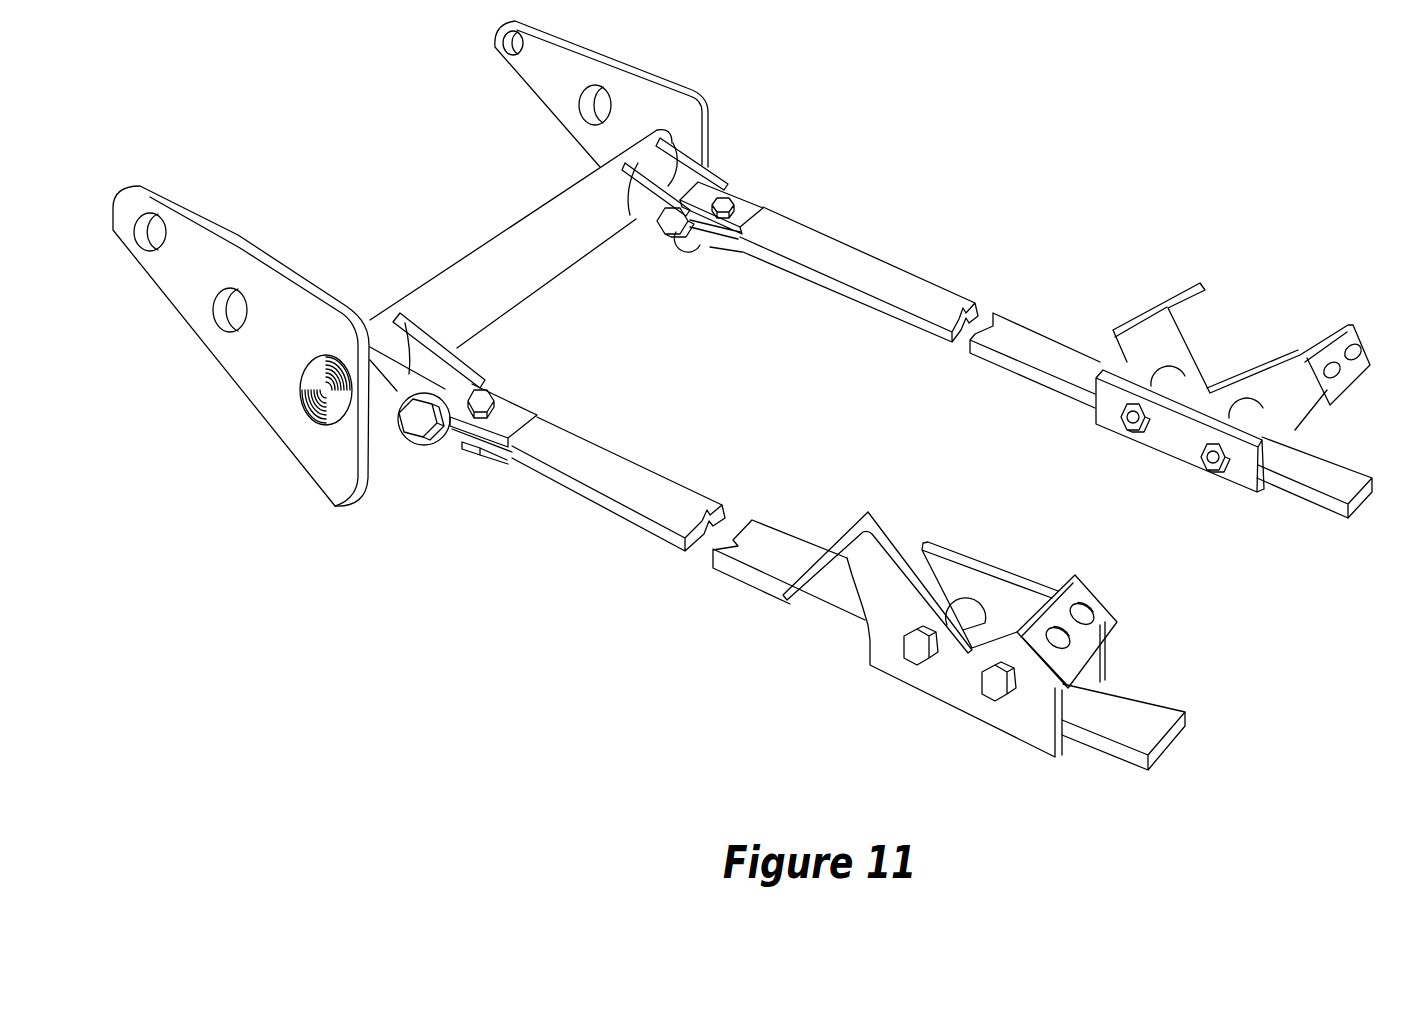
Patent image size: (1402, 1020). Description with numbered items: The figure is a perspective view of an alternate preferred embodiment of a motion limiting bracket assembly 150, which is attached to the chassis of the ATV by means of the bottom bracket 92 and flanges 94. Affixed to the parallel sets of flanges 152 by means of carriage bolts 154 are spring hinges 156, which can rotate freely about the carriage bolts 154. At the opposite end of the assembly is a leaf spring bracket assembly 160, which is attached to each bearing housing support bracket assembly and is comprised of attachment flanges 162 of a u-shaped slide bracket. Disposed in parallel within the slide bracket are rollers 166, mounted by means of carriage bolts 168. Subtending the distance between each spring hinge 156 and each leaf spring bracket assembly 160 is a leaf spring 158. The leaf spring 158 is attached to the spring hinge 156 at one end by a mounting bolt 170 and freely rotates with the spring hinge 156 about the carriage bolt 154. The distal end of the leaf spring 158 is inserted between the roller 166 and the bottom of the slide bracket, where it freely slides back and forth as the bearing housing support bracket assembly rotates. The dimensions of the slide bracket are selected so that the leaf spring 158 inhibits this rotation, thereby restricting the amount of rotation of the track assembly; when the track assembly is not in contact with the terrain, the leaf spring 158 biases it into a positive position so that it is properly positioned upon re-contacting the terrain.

The motion limiting bracket assembly 150 is at (199, 165).
The flanges 94 is at (588, 74).
The bottom bracket 92 is at (508, 250).
The parallel sets of flanges 152 is at (648, 198).
The carriage bolts 154 is at (680, 199).
The mounting bolt 170 is at (723, 212).
The spring hinges 156 is at (738, 227).
The leaf spring 158 is at (1063, 398).
The leaf spring bracket assembly 160 is at (1108, 390).
The rollers 166 is at (970, 603).
The attachment flanges 162 is at (1098, 603).
The carriage bolts 168 is at (998, 700).